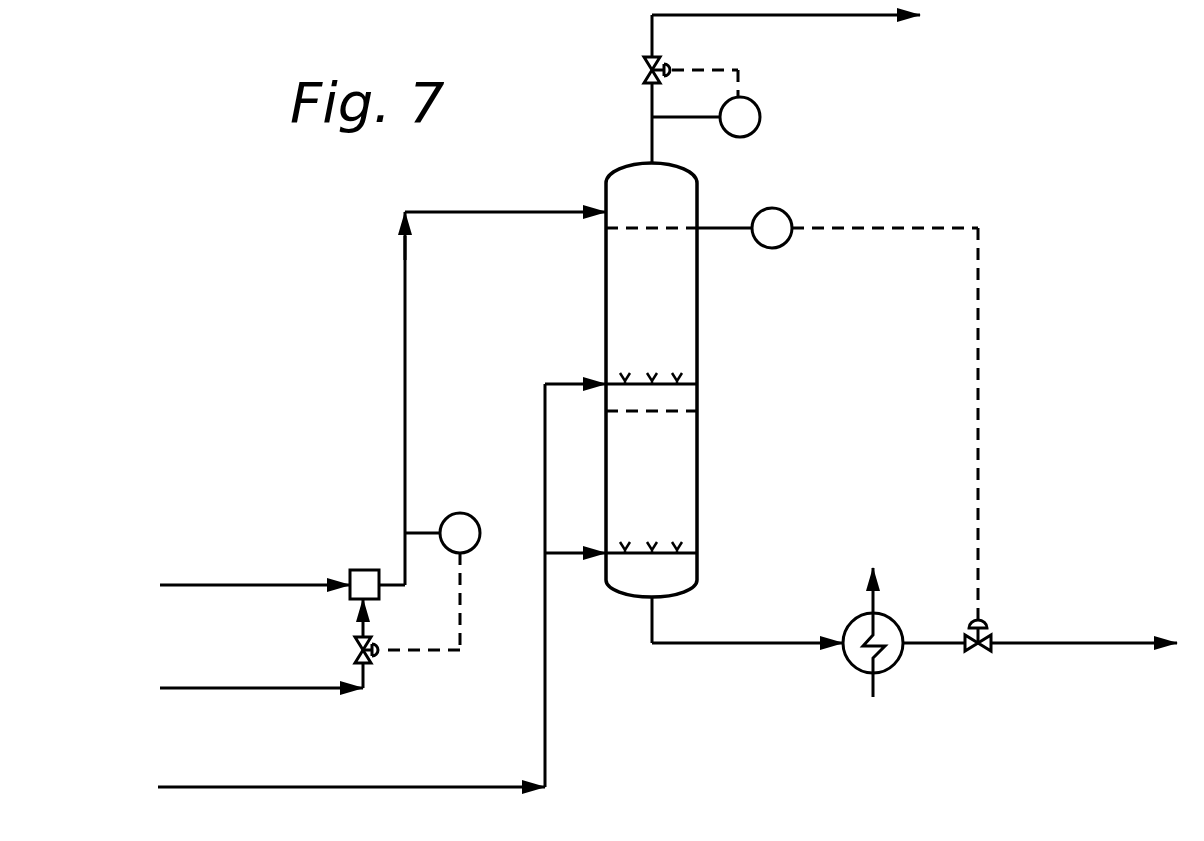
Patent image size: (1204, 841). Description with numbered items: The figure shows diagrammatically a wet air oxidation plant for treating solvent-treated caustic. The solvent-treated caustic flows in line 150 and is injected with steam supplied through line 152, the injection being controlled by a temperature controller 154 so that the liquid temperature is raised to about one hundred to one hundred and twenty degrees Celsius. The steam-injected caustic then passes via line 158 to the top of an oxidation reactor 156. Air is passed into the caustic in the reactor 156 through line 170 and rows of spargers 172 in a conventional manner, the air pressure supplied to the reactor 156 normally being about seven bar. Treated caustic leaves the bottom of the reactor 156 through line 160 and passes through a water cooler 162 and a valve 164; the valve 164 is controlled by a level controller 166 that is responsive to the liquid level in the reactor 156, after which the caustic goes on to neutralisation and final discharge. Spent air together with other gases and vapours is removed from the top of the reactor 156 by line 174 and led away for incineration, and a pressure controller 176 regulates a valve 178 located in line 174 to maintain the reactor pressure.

The line 150 is at (268, 583).
The line 152 is at (268, 686).
The temperature controller 154 is at (468, 512).
The oxidation reactor 156 is at (698, 305).
The line 158 is at (500, 210).
The line 160 is at (748, 645).
The water cooler 162 is at (896, 662).
The valve 164 is at (985, 648).
The level controller 166 is at (790, 212).
The line 170 is at (547, 680).
The rows of spargers 172 is at (685, 553).
The line 174 is at (850, 20).
The pressure controller 176 is at (760, 125).
The valve 178 is at (668, 62).